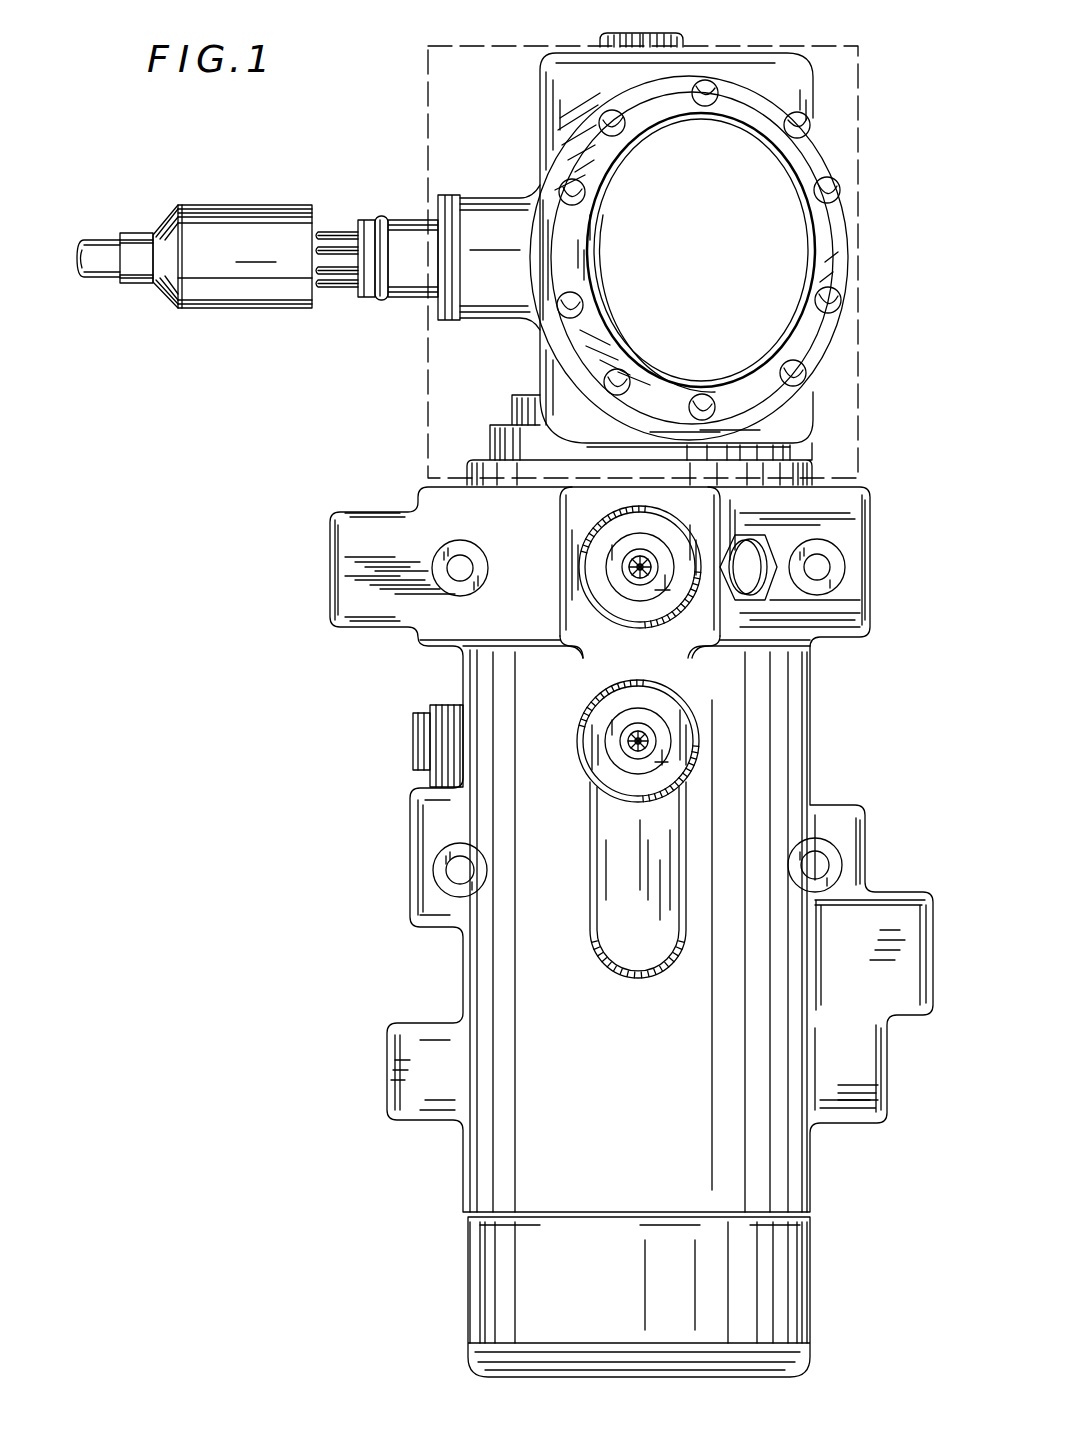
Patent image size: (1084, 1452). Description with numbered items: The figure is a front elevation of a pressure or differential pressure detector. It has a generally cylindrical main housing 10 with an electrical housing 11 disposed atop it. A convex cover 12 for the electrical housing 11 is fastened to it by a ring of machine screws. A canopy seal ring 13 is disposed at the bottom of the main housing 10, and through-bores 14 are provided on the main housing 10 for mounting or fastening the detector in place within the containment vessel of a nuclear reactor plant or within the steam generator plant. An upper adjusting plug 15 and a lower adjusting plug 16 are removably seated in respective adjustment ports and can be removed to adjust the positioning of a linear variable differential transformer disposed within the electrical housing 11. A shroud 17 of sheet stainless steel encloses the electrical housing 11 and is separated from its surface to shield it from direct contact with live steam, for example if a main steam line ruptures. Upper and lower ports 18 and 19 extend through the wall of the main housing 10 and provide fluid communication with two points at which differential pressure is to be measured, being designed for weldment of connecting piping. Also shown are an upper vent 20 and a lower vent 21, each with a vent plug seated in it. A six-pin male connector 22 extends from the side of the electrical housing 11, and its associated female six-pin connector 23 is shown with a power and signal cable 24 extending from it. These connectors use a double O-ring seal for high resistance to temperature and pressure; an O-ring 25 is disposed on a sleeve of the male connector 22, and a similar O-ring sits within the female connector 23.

The main housing 10 is at (463, 979).
The electrical housing 11 is at (775, 72).
The convex cover 12 is at (797, 176).
The canopy seal ring 13 is at (475, 1350).
The through-bores 14 is at (453, 556).
The upper adjusting plug 15 is at (602, 37).
The lower adjusting plug 16 is at (815, 447).
The shroud 17 is at (458, 56).
The upper port 18 is at (616, 603).
The lower port 19 is at (592, 770).
The upper vent 20 is at (763, 543).
The lower vent 21 is at (413, 752).
The six-pin male connector 22 is at (408, 226).
The female six-pin connector 23 is at (251, 300).
The power and signal cable 24 is at (103, 278).
The O-ring 25 is at (386, 216).